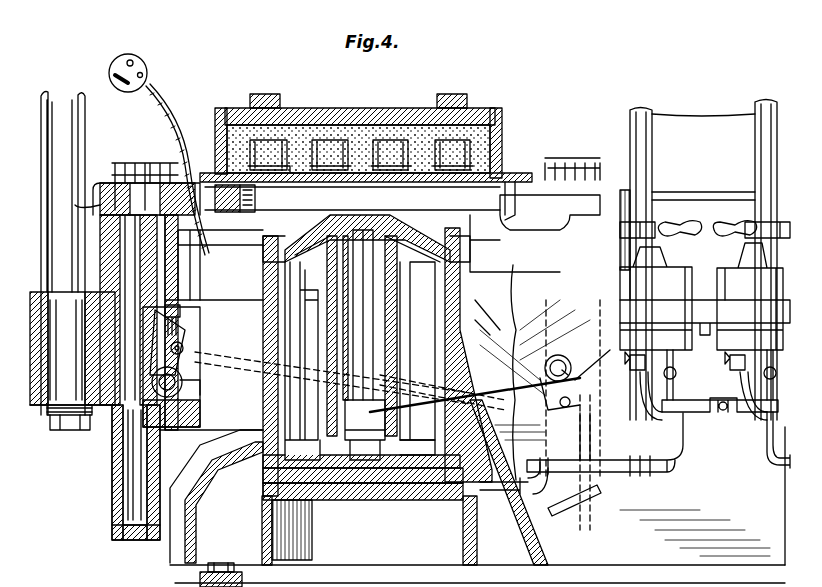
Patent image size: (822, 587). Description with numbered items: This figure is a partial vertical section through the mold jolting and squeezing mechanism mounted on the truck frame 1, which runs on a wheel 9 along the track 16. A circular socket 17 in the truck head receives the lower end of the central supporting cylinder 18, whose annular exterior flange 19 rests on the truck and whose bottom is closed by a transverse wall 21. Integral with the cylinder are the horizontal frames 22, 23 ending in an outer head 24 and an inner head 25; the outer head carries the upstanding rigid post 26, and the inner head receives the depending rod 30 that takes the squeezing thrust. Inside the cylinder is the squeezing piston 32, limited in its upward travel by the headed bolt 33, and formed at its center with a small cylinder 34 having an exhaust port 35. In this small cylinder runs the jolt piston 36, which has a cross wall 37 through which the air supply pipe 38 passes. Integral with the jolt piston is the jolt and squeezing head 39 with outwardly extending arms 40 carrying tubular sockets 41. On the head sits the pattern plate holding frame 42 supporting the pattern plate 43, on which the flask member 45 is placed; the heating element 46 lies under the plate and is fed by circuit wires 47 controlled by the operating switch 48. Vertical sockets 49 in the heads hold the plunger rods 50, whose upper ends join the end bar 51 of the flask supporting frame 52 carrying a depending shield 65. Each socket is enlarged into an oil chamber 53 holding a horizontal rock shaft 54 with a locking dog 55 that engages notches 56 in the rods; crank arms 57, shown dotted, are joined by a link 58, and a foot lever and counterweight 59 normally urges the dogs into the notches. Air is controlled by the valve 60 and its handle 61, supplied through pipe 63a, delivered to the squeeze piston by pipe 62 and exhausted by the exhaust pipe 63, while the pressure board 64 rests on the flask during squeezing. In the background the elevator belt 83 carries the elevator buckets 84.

The truck frame 1 is at (648, 548).
The wheel 9 is at (222, 565).
The track 16 is at (200, 580).
The circular socket 17 is at (320, 557).
The central supporting cylinder 18 is at (268, 300).
The annular exterior flange 19 is at (265, 405).
The transverse wall 21 is at (410, 500).
The horizontal frame 22 is at (205, 420).
The horizontal frame 23 is at (540, 272).
The outer head 24 is at (62, 290).
The inner head 25 is at (700, 290).
The upstanding rigid post 26 is at (46, 92).
The depending rod 30 is at (635, 112).
The squeezing piston 32 is at (282, 340).
The headed bolt 33 is at (350, 380).
The small cylinder 34 is at (398, 315).
The exhaust port 35 is at (405, 440).
The jolt piston 36 is at (398, 352).
The cross wall 37 is at (378, 400).
The air supply pipe 38 is at (375, 300).
The jolt and squeezing head 39 is at (405, 232).
The outwardly extending arms 40 is at (192, 170).
The tubular sockets 41 is at (630, 215).
The pattern plate holding frame 42 is at (520, 175).
The pattern plate 43 is at (305, 135).
The flask member 45 is at (492, 130).
The heating element 46 is at (360, 178).
The circuit wires 47 is at (168, 115).
The operating switch 48 is at (148, 75).
The vertical sockets 49 is at (112, 460).
The vertical plunger rods 50 is at (118, 238).
The end bar 51 is at (103, 183).
The flask supporting frame 52 is at (145, 175).
The oil chamber 53 is at (150, 358).
The horizontal rock shaft 54 is at (200, 385).
The locking dog 55 is at (182, 320).
The notches 56 is at (112, 470).
The crank arm 57 is at (573, 372).
The link 58 is at (405, 420).
The foot lever and counterweight 59 is at (560, 518).
The valve 60 is at (655, 262).
The handle 61 is at (720, 220).
The pipe 62 is at (675, 462).
The exhaust pipe 63 is at (680, 372).
The supply pipe 63a is at (745, 410).
The pressure board 64 is at (405, 108).
The depending shield 65 is at (100, 200).
The elevator belt 83 is at (703, 116).
The elevator buckets 84 is at (735, 195).